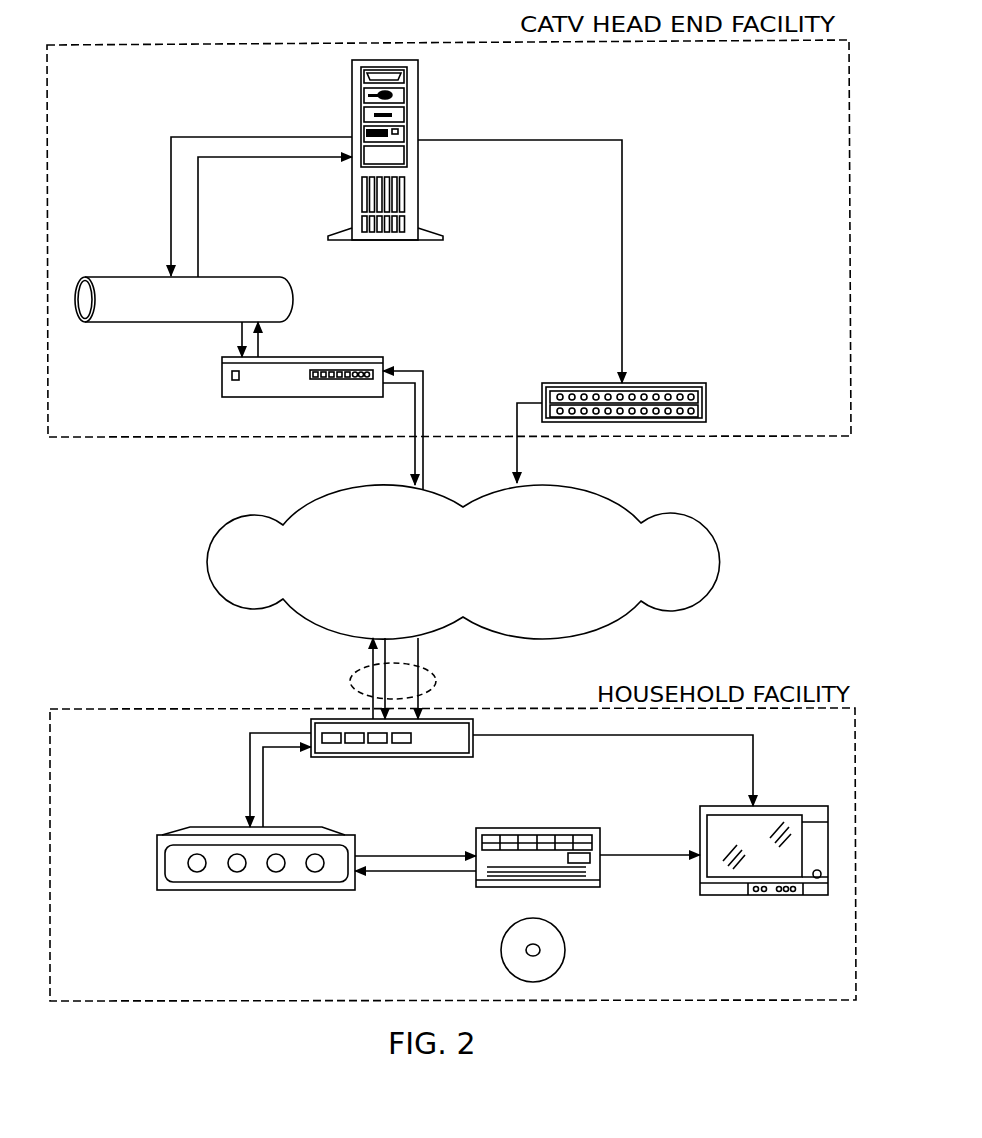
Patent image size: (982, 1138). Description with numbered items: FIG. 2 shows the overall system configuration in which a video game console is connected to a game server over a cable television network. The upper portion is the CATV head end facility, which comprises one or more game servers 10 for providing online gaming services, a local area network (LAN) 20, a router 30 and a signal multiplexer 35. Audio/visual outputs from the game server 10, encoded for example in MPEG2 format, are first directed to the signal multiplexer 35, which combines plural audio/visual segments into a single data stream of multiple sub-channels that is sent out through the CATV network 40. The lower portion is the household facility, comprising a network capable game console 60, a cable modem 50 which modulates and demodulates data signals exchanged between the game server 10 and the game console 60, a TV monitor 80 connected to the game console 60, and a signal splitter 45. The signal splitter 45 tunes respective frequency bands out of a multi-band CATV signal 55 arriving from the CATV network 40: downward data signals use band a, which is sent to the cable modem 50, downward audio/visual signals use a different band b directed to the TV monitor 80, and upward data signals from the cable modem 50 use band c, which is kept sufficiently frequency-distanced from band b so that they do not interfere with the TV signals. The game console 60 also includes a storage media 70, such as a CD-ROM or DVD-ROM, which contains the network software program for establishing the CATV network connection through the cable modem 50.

The game server 10 is at (418, 83).
The local area network (LAN) 20 is at (293, 302).
The router 30 is at (365, 357).
The signal multiplexer 35 is at (680, 383).
The CATV network 40 is at (630, 507).
The signal splitter 45 is at (473, 745).
The cable modem 50 is at (323, 832).
The multi-band CATV signal 55 is at (430, 690).
The game console 60 is at (585, 828).
The storage media 70 is at (563, 933).
The TV monitor 80 is at (810, 806).
The band a is at (386, 668).
The band b is at (433, 675).
The band c is at (372, 676).